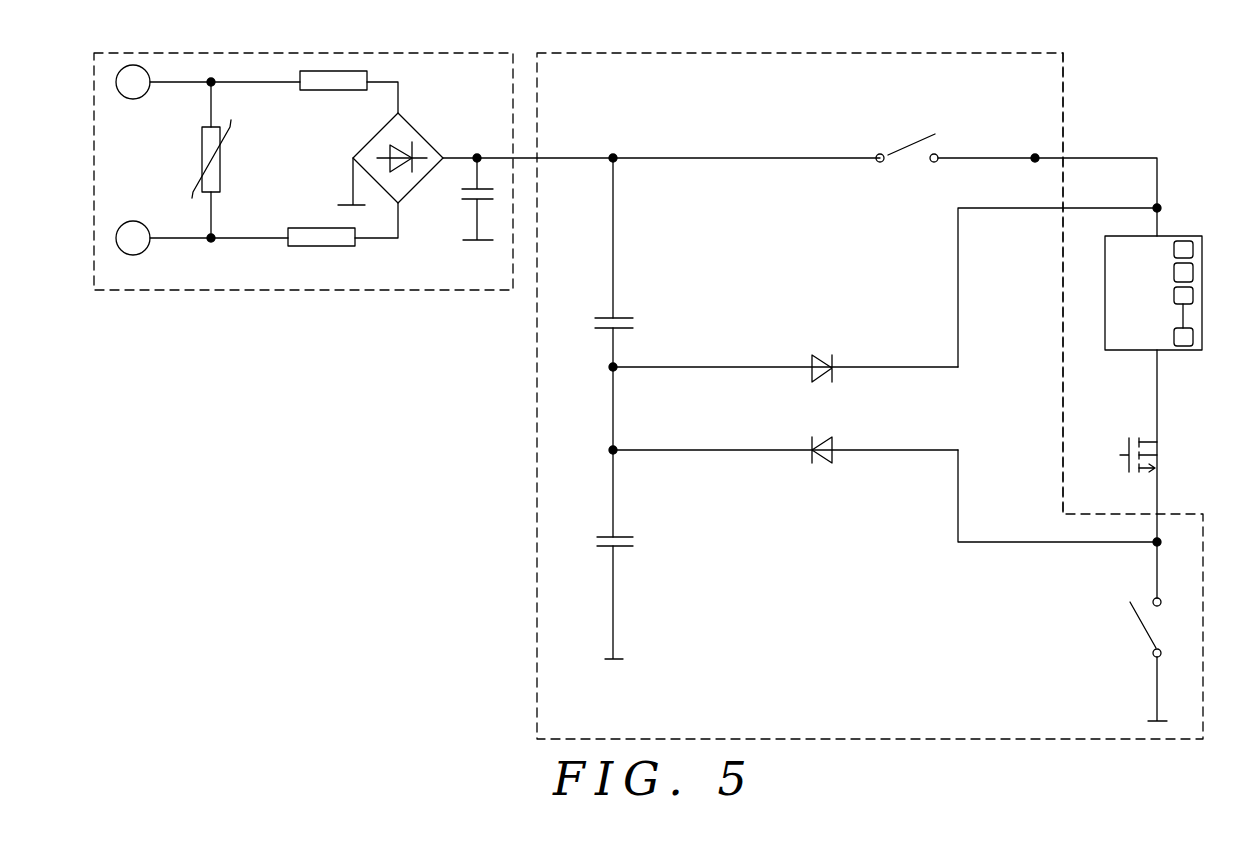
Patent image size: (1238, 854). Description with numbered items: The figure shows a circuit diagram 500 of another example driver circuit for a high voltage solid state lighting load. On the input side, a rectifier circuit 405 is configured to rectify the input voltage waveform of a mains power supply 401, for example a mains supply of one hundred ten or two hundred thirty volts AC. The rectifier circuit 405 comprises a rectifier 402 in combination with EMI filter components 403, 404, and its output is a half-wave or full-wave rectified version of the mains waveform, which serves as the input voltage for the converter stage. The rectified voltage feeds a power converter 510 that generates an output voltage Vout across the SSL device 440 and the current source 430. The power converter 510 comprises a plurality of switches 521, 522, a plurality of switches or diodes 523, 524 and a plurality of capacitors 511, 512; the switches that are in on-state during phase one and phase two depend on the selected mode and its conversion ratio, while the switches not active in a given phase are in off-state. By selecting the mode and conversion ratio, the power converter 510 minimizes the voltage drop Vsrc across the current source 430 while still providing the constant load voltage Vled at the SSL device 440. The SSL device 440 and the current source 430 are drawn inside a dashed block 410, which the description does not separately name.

The mains power supply 401 is at (203, 157).
The rectifier 402 is at (410, 110).
The EMI filter component 403 is at (320, 90).
The EMI filter component 404 is at (460, 193).
The rectifier circuit 405 is at (321, 292).
The control circuit 410 is at (1063, 93).
The current source 430 is at (1120, 445).
The SSL device 440 is at (1182, 235).
The circuit diagram 500 is at (345, 380).
The power converter 510 is at (538, 462).
The capacitor 511 is at (627, 300).
The capacitor 512 is at (605, 552).
The switch 521 is at (915, 140).
The switch 522 is at (1142, 625).
The switch or diode 523 is at (822, 353).
The switch or diode 524 is at (820, 470).